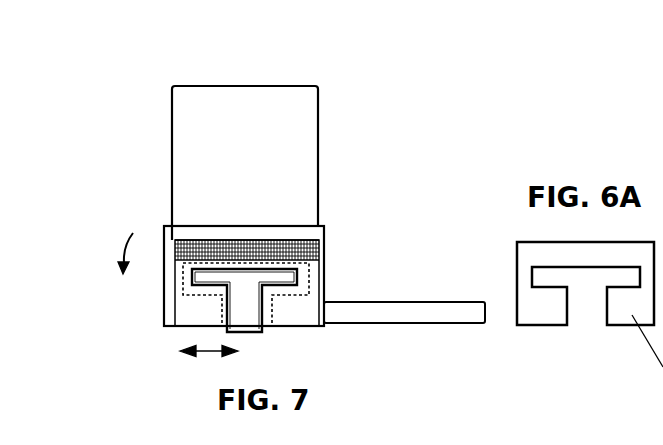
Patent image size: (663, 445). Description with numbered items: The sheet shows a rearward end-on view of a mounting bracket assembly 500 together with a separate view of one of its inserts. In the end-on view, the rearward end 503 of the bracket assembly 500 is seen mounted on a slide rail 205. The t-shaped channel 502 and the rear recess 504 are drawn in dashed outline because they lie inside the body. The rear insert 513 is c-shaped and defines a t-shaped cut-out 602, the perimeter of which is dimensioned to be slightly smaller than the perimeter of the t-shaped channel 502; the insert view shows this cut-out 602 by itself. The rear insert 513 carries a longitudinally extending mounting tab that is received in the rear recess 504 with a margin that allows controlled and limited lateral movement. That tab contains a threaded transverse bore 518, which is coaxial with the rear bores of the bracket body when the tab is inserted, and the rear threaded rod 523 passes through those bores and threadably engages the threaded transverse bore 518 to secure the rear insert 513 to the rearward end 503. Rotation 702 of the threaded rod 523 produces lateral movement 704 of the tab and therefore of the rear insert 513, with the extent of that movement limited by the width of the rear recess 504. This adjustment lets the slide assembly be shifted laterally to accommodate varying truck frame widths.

In FIG. 7, the mounting bracket assembly 500 is at (258, 73).
In FIG. 7, the rearward end 503 is at (325, 232).
In FIG. 7, the rear recess 504 is at (222, 253).
In FIG. 7, the threaded transverse bore 518 is at (265, 243).
In FIG. 7, the rear threaded rod 523 is at (170, 245).
In FIG. 7, the rear insert 513 is at (325, 260).
In FIG. 7, the t-shaped channel 502 is at (183, 294).
In FIG. 7, the slide rail 205 is at (258, 326).
In FIG. 7, the rotation 702 is at (117, 260).
In FIG. 7, the lateral movement 704 is at (213, 357).
In FIG. 6A, the t-shaped cut-out 602 is at (583, 300).